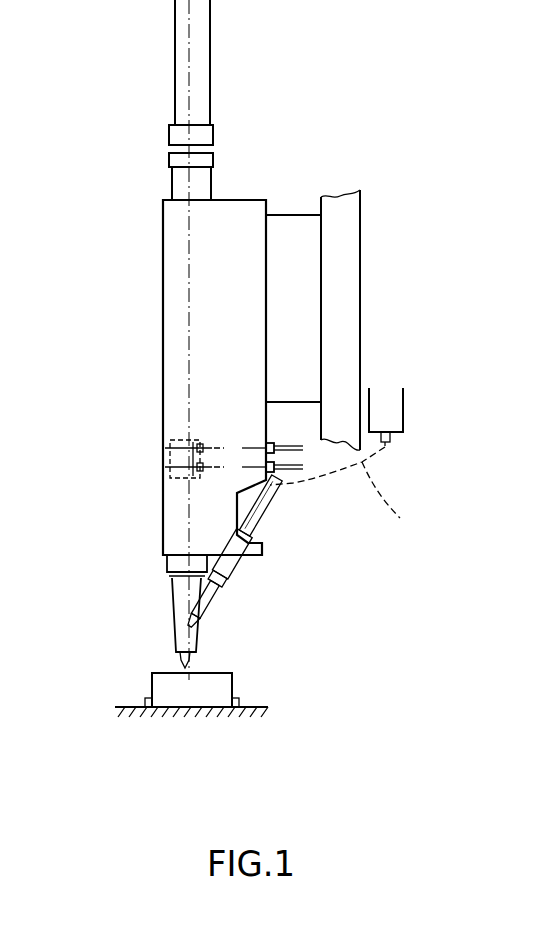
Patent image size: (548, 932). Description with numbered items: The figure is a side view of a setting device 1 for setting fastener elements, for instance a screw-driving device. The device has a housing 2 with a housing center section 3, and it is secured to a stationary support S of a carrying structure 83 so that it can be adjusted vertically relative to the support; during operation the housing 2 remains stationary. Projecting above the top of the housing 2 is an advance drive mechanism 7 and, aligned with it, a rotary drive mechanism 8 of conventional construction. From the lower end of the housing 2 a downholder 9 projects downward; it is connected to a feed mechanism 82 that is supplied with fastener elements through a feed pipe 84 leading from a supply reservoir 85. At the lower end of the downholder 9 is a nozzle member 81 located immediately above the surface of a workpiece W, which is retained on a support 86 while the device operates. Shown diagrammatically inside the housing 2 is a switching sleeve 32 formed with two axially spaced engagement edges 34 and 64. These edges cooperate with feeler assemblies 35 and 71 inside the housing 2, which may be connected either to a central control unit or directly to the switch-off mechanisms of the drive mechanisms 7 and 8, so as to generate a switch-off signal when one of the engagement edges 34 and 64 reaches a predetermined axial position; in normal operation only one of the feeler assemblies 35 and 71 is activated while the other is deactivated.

The setting device 1 is at (150, 318).
The housing 2 is at (163, 253).
The housing center section 3 is at (176, 404).
The advance drive mechanism 7 is at (200, 187).
The rotary drive mechanism 8 is at (200, 93).
The downholder 9 is at (175, 625).
The switching sleeve 32 is at (162, 466).
The engagement edge 34 is at (215, 448).
The feeler assembly 35 is at (268, 482).
The engagement edge 64 is at (203, 442).
The feeler assembly 71 is at (273, 436).
The nozzle member 81 is at (190, 665).
The feed mechanism 82 is at (236, 572).
The carrying structure 83 is at (342, 248).
The feed pipe 84 is at (351, 497).
The supply reservoir 85 is at (388, 413).
The support 86 is at (177, 715).
The stationary support S is at (300, 317).
The workpiece W is at (210, 692).